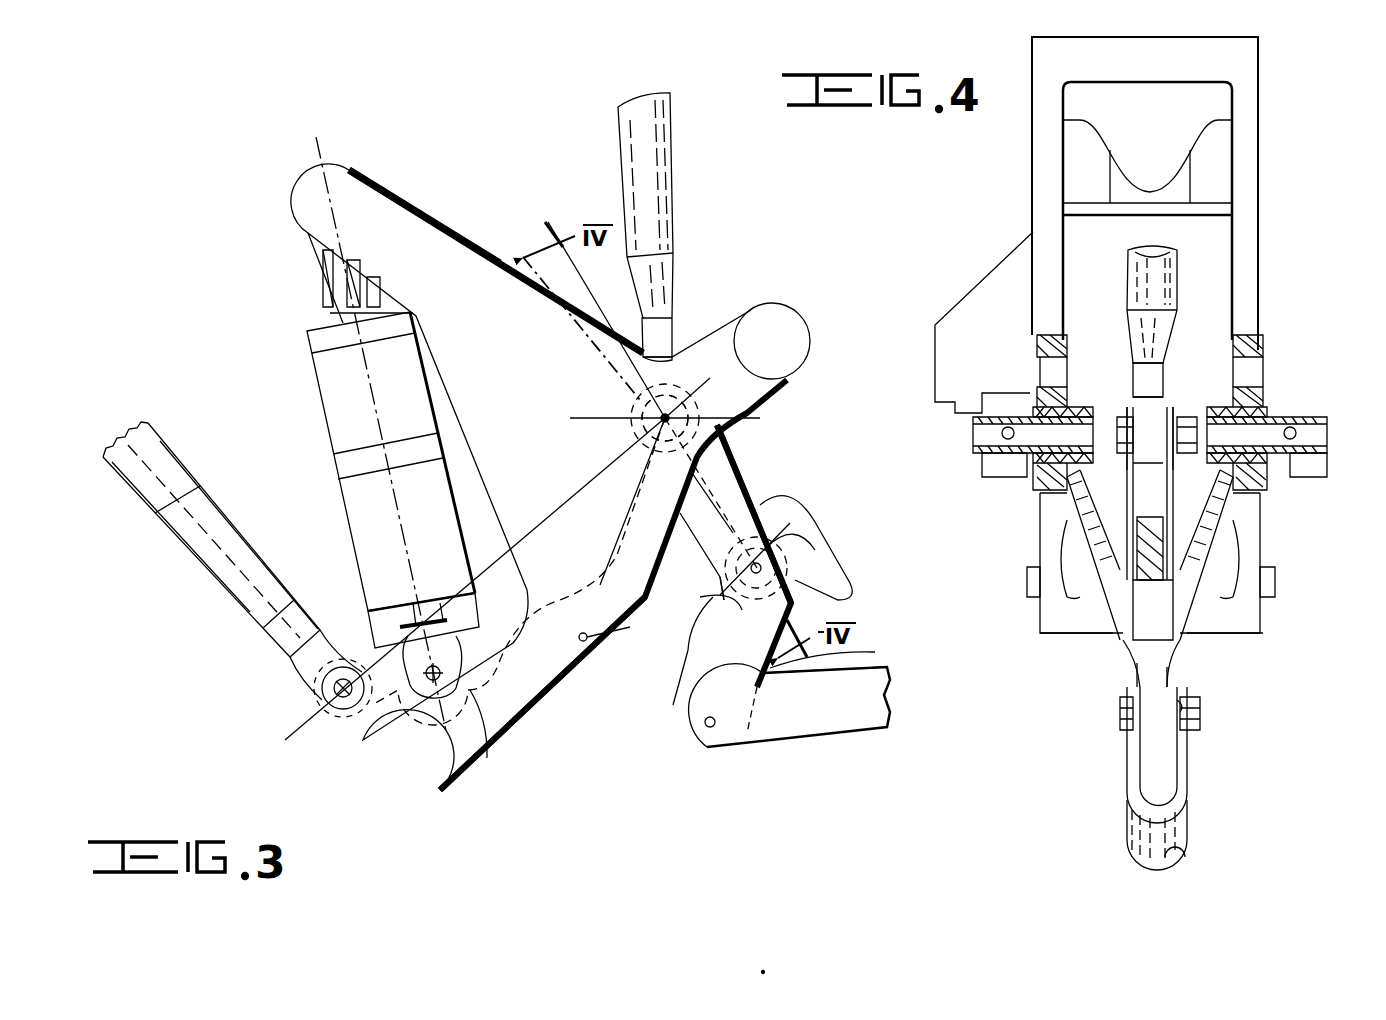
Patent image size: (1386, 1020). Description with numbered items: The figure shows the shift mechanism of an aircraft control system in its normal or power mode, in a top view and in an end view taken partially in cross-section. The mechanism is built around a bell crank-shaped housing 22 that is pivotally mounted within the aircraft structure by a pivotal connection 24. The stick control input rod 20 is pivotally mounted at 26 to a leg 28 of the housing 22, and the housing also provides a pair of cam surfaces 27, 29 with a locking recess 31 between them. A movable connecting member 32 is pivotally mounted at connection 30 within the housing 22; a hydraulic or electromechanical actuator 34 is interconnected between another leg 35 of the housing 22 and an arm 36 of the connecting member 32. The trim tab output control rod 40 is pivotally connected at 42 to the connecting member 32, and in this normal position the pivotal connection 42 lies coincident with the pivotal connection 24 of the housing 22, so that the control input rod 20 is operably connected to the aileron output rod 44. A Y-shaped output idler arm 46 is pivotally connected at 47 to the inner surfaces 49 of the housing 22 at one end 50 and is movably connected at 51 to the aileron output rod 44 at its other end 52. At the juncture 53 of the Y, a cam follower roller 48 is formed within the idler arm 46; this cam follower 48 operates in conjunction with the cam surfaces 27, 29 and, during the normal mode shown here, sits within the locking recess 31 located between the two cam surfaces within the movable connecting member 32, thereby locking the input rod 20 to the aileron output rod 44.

In FIG. 3, the input control rod 20 is at (140, 490).
In FIG. 3, the bell crank-shaped housing 22 is at (535, 393).
In FIG. 4, the bell crank-shaped housing 22 is at (1258, 158).
In FIG. 3, the pivotal connection 24 is at (745, 413).
In FIG. 4, the pivotal connection 24 is at (1018, 470).
In FIG. 3, the pivotal mounting 26 is at (334, 692).
In FIG. 3, the cam surface 27 is at (716, 635).
In FIG. 3, the leg 28 is at (443, 773).
In FIG. 3, the cam surface 29 is at (840, 598).
In FIG. 3, the pivotal connection 30 is at (575, 640).
In FIG. 3, the locking recess 31 is at (798, 493).
In FIG. 3, the movable connecting member 32 is at (690, 617).
In FIG. 4, the movable connecting member 32 is at (1180, 405).
In FIG. 3, the actuator 34 is at (356, 523).
In FIG. 3, the leg 35 is at (375, 218).
In FIG. 3, the arm 36 is at (490, 762).
In FIG. 3, the trim tab output control rod 40 is at (637, 138).
In FIG. 4, the trim tab output control rod 40 is at (1170, 283).
In FIG. 4, the pivotal connection 42 is at (1123, 400).
In FIG. 3, the aileron output rod 44 is at (840, 740).
In FIG. 4, the aileron output rod 44 is at (1182, 833).
In FIG. 3, the Y-shaped output idler arm 46 is at (830, 662).
In FIG. 4, the Y-shaped output idler arm 46 is at (1162, 662).
In FIG. 3, the pivotal connection 47 is at (665, 418).
In FIG. 4, the pivotal connection 47 is at (1100, 420).
In FIG. 3, the cam follower roller 48 is at (828, 548).
In FIG. 4, the cam follower roller 48 is at (1130, 640).
In FIG. 4, the inner surfaces 49 is at (1060, 517).
In FIG. 4, the end 50 is at (1286, 512).
In FIG. 3, the movable connection 51 is at (710, 728).
In FIG. 4, the movable connection 51 is at (1192, 720).
In FIG. 3, the end 52 is at (680, 740).
In FIG. 4, the end 52 is at (1150, 742).
In FIG. 3, the juncture 53 is at (720, 633).
In FIG. 4, the juncture 53 is at (1180, 630).